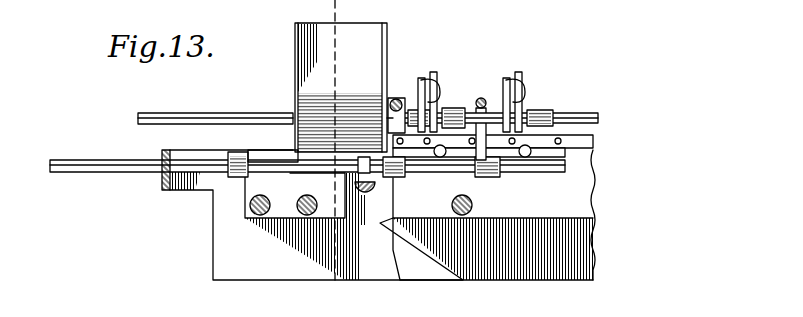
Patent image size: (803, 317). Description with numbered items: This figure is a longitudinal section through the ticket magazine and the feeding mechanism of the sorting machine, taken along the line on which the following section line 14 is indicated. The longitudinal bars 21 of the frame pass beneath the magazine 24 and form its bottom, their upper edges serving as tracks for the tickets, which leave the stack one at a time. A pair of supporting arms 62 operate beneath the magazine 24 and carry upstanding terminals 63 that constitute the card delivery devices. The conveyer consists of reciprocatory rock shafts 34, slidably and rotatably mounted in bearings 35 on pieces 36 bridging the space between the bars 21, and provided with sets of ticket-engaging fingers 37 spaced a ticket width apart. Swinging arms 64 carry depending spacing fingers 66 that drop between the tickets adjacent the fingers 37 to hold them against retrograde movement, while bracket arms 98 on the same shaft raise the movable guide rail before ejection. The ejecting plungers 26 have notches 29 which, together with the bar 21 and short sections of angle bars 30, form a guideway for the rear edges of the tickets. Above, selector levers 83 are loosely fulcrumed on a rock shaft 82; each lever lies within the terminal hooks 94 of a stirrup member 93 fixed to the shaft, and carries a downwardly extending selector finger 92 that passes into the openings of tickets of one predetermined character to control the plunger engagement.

The section line 14 is at (335, 280).
The longitudinal bars 21 is at (232, 240).
The magazine 24 is at (341, 87).
The ejecting plunger 26 is at (441, 158).
The notches 29 is at (530, 158).
The angle bars 30 is at (415, 149).
The rock shafts 34 is at (110, 172).
The bearings 35 is at (345, 175).
The bridge pieces 36 is at (370, 210).
The ticket-engaging fingers 37 is at (472, 178).
The supporting arms 62 is at (246, 151).
The upstanding terminals 63 is at (291, 150).
The swinging arms 64 is at (392, 98).
The spacing fingers 66 is at (390, 117).
The rock shaft 82 is at (590, 114).
The selector levers 83 is at (438, 98).
The selector fingers 92 is at (446, 108).
The stirrup member 93 is at (422, 77).
The terminal hooks 94 is at (418, 82).
The bracket arms 98 is at (478, 101).